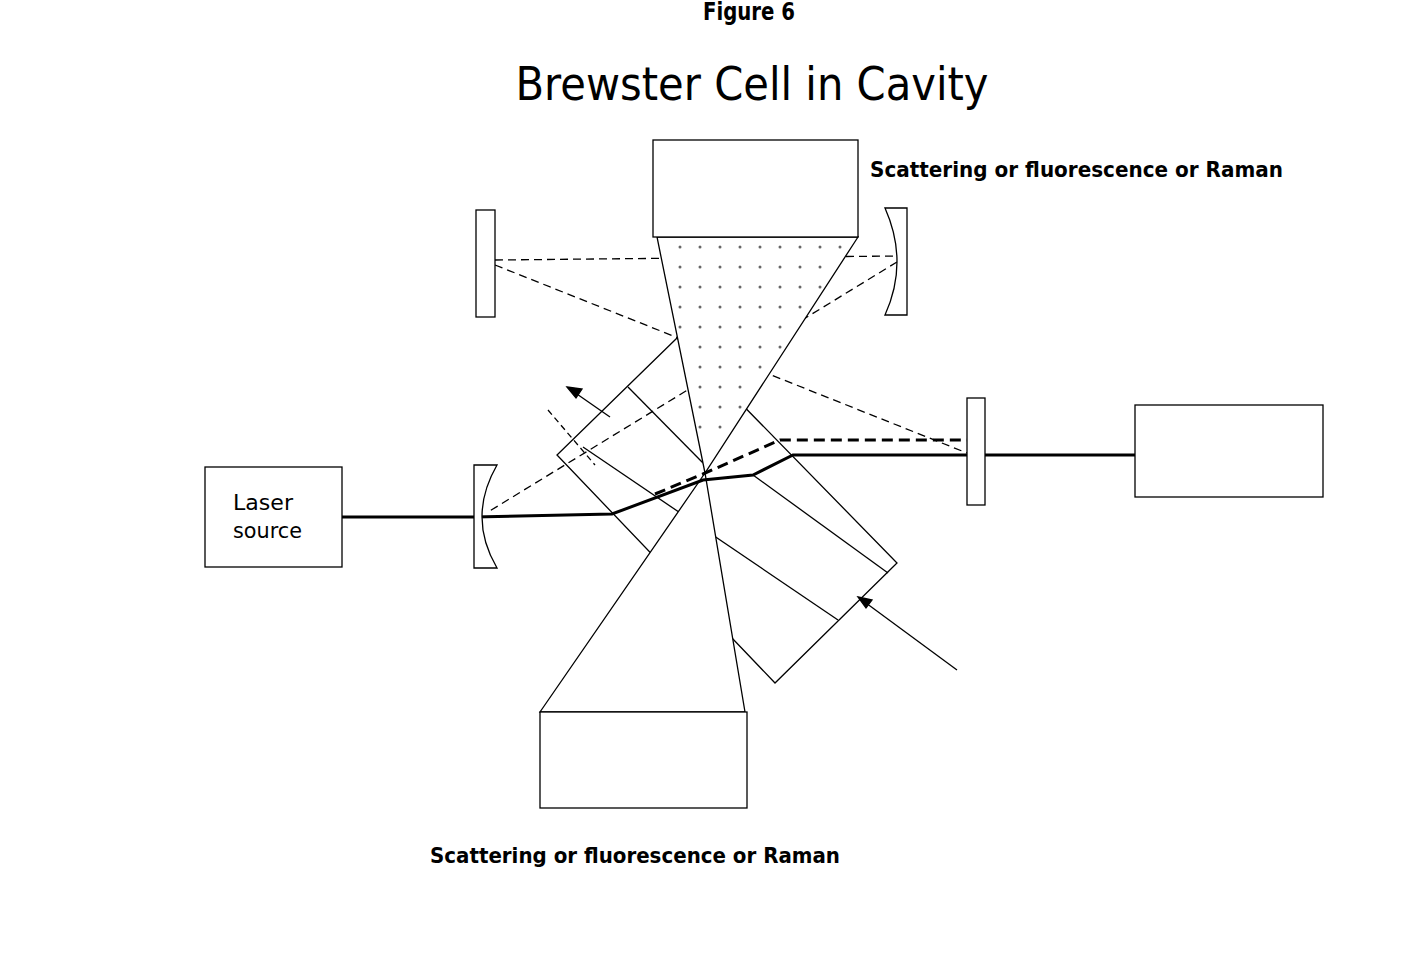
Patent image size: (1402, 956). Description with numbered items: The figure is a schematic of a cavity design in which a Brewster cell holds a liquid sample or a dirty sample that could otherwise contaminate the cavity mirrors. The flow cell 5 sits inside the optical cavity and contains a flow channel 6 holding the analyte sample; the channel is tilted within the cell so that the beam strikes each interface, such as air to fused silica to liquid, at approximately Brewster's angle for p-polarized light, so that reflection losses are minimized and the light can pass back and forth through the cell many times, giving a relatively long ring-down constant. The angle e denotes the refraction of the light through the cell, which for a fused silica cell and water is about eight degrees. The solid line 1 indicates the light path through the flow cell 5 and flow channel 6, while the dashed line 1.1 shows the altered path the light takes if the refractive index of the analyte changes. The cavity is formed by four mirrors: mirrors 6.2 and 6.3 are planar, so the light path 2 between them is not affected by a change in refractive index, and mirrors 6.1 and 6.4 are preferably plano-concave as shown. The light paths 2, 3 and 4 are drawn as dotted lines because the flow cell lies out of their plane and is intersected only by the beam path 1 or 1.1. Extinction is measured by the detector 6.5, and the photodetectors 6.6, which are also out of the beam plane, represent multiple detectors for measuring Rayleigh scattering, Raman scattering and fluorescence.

The solid line light path 1 is at (738, 484).
The dashed line altered light path 1.1 is at (811, 455).
The light path 2 is at (731, 359).
The light path 3 is at (696, 248).
The light path 4 is at (692, 387).
The flow cell 5 is at (777, 663).
The flow channel 6 is at (873, 568).
The angle e is at (579, 436).
The mirror 6.1 is at (466, 516).
The mirror 6.2 is at (999, 455).
The mirror 6.3 is at (465, 263).
The mirror 6.4 is at (922, 261).
The detector 6.5 is at (1229, 437).
The photodetectors 6.6 is at (681, 474).